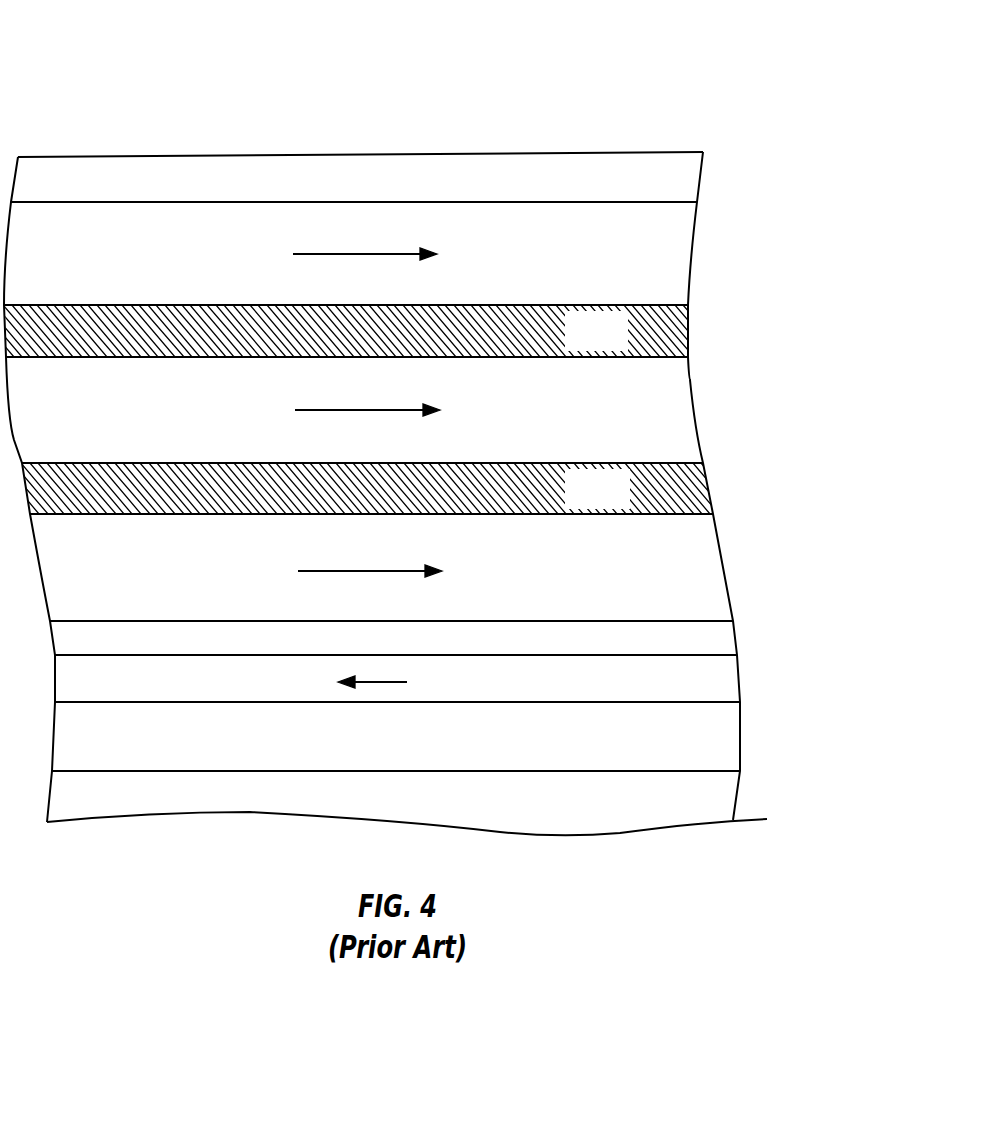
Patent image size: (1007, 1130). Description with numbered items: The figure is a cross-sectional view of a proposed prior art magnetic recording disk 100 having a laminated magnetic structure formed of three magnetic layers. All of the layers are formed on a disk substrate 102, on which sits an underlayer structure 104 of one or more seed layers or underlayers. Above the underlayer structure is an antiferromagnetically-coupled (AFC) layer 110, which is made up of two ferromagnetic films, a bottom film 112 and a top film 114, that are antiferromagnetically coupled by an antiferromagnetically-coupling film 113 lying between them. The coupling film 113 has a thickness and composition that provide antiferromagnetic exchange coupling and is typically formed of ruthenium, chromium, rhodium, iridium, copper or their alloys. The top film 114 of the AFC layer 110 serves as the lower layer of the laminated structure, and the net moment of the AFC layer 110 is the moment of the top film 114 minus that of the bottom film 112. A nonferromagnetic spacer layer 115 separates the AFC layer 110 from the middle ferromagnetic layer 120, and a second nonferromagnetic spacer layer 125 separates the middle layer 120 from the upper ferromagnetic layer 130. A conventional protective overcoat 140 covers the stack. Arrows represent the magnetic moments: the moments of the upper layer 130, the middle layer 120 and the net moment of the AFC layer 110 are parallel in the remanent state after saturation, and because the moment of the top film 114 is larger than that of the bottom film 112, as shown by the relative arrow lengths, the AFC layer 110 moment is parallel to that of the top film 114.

The magnetic recording disk 100 is at (136, 55).
The disk substrate 102 is at (625, 826).
The underlayer structure 104 is at (622, 749).
The antiferromagnetically-coupled (AFC) layer 110 is at (755, 510).
The bottom film 112 is at (622, 691).
The antiferromagnetically-coupling film 113 is at (622, 651).
The top film 114 is at (670, 579).
The nonferromagnetic spacer layer 115 is at (622, 501).
The middle ferromagnetic layer 120 is at (647, 421).
The nonferromagnetic spacer layer 125 is at (620, 346).
The upper ferromagnetic layer 130 is at (642, 264).
The protective overcoat 140 is at (619, 188).